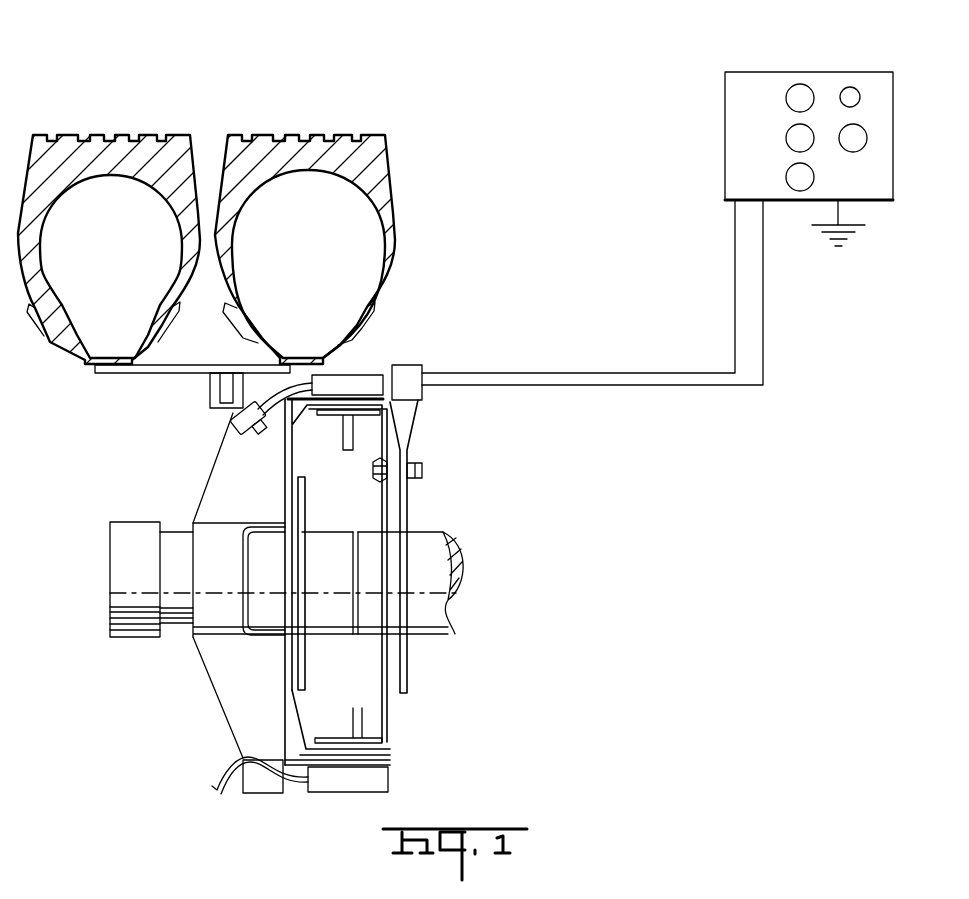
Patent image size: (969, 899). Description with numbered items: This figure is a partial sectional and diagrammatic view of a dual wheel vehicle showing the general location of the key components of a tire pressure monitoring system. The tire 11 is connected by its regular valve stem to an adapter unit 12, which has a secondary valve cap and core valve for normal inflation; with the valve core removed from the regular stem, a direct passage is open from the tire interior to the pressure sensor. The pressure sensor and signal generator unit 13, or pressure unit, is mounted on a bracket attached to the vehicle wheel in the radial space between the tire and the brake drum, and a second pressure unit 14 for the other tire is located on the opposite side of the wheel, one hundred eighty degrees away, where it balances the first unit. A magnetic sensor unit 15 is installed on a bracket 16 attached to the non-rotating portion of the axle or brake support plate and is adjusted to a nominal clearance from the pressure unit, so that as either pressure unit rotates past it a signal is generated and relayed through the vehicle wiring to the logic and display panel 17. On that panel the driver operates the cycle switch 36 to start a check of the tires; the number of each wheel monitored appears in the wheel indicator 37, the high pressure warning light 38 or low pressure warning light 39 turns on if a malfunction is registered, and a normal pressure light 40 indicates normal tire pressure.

The tire 11 is at (325, 135).
The adapter unit 12 is at (238, 420).
The pressure sensor and signal generator unit 13 is at (350, 380).
The second pressure unit 14 is at (385, 780).
The magnetic sensor unit 15 is at (410, 372).
The bracket 16 is at (405, 430).
The logic and display panel 17 is at (893, 100).
The cycle switch 36 is at (848, 88).
The wheel indicator 37 is at (856, 150).
The high pressure warning light 38 is at (792, 86).
The low pressure warning light 39 is at (787, 172).
The normal pressure light 40 is at (787, 138).